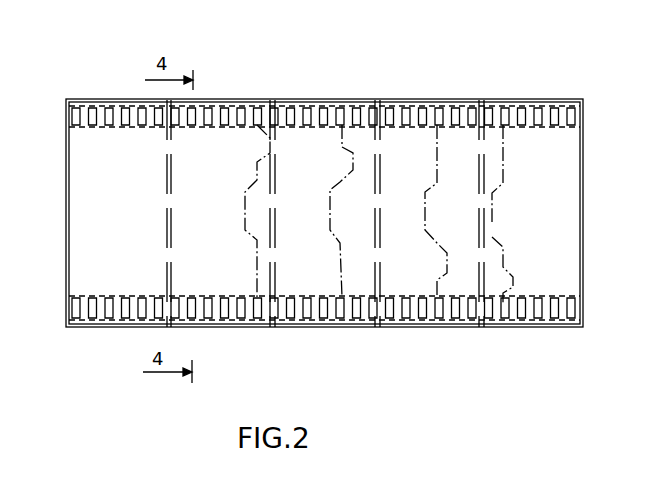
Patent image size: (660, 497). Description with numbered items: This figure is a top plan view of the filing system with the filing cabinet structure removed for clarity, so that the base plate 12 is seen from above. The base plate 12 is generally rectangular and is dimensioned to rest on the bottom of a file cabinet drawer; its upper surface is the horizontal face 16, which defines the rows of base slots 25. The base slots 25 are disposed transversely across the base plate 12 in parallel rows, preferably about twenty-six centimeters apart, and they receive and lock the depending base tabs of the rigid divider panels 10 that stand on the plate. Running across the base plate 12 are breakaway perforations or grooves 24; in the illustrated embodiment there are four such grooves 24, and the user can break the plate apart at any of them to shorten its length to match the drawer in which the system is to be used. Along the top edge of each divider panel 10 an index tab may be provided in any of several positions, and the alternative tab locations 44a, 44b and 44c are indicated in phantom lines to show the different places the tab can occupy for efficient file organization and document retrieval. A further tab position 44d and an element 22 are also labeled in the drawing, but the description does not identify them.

The divider panel 10 is at (258, 327).
The base plate 12 is at (238, 63).
The horizontal face 16 is at (118, 146).
The edge of strip 22 is at (493, 100).
The breakaway grooves 24 is at (270, 246).
The base slots 25 is at (93, 123).
The index tab 44a is at (270, 150).
The index tab 44b is at (353, 160).
The index tab 44c is at (448, 267).
The separation line 44d is at (517, 287).